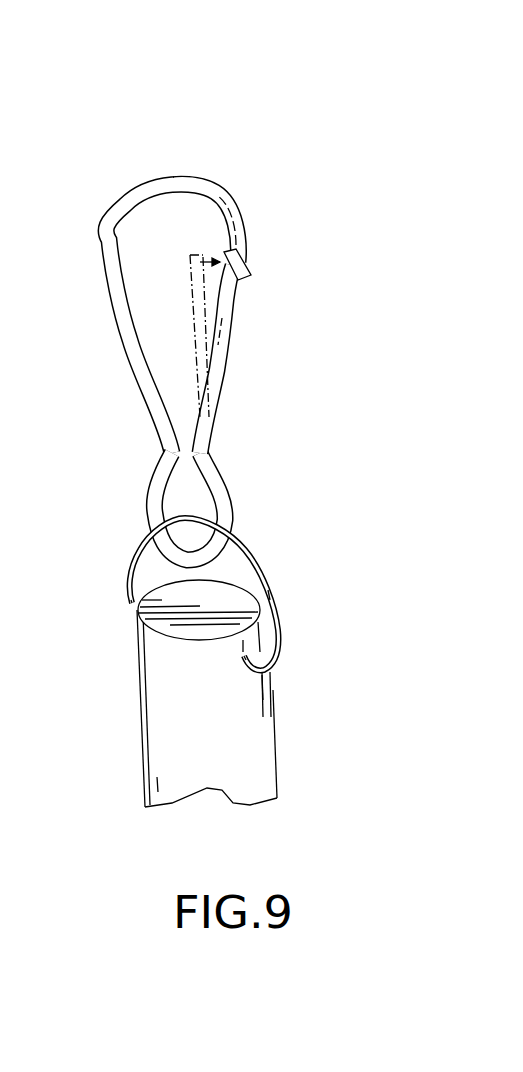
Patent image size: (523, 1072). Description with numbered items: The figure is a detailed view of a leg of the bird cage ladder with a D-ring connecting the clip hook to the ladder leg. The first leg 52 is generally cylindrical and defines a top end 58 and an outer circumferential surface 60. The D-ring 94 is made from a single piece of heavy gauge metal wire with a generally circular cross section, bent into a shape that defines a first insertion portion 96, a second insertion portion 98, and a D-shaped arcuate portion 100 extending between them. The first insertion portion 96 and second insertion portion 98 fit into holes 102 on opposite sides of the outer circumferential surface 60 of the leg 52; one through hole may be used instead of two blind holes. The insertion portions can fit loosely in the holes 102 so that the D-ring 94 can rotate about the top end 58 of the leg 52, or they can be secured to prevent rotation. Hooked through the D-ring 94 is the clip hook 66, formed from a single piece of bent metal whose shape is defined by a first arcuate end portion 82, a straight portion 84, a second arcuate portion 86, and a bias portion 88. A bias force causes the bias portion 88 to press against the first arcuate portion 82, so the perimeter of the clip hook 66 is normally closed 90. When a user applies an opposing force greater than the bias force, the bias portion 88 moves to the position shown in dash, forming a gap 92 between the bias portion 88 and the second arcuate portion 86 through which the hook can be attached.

The clip hook 66 is at (186, 304).
The second arcuate portion 86 is at (140, 180).
The straight portion 84 is at (127, 355).
The first arcuate end portion 82 is at (150, 502).
The bias portion 88 is at (227, 350).
The normally closed 90 is at (233, 261).
The gap 92 is at (212, 283).
The D-ring 94 is at (253, 567).
The D-shaped arcuate portion 100 is at (255, 585).
The second insertion portion 98 is at (138, 598).
The holes 102 is at (245, 657).
The first insertion portion 96 is at (267, 690).
The top end 58 is at (163, 628).
The first leg 52 is at (143, 792).
The outer circumferential surface 60 is at (252, 763).